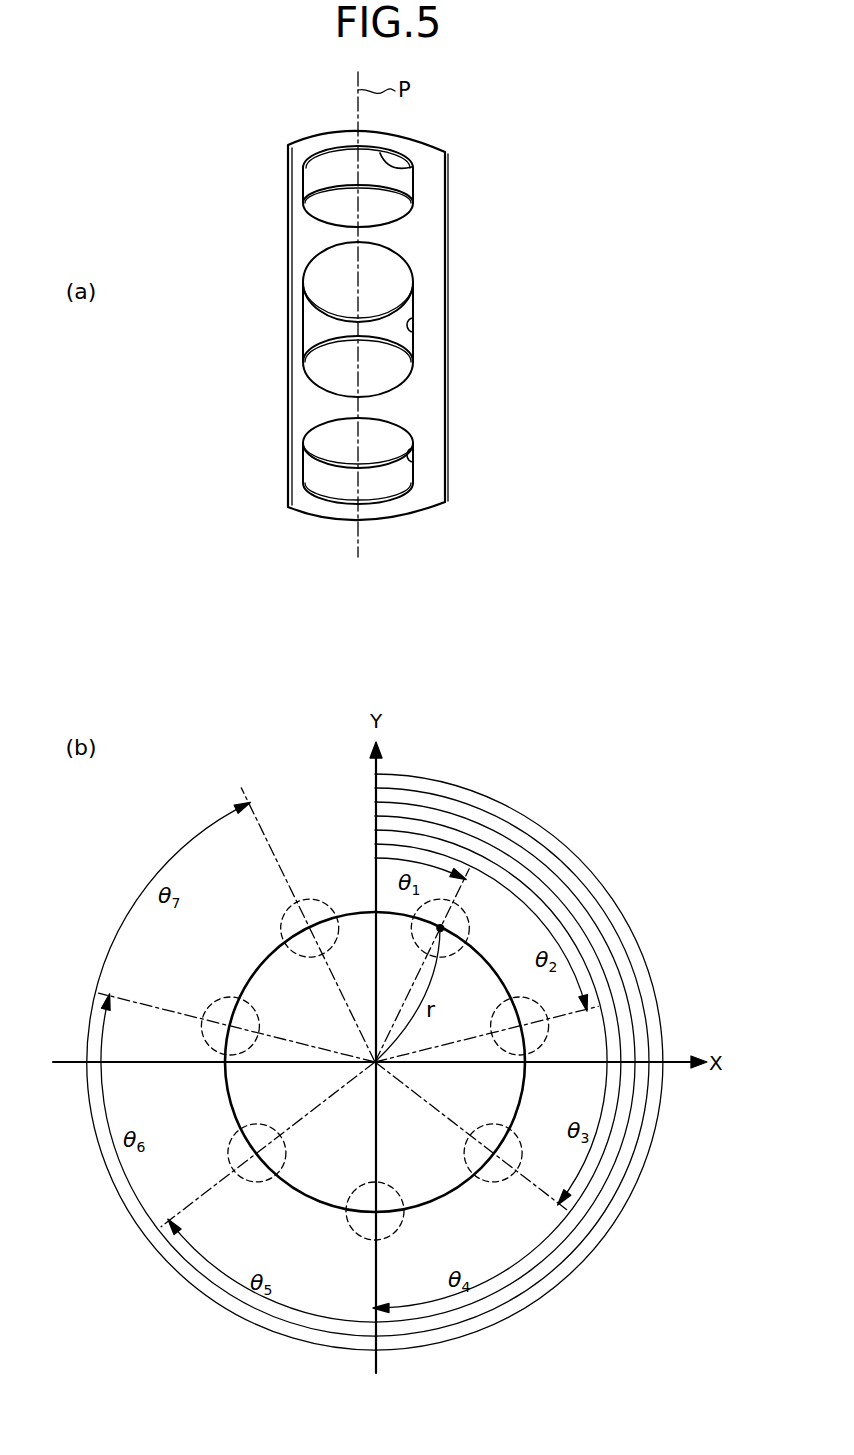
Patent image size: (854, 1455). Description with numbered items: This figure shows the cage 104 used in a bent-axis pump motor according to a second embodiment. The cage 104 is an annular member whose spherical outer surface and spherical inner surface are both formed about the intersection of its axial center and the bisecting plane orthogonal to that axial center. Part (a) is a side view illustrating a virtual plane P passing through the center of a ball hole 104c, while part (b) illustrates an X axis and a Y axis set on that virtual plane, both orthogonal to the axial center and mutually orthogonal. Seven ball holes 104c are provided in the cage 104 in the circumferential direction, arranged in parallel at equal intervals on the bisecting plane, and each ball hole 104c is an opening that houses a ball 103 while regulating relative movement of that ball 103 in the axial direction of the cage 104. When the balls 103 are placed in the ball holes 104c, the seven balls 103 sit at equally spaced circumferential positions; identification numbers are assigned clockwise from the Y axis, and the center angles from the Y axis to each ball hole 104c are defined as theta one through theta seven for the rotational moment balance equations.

The cage 104 is at (437, 243).
The ball hole 104c is at (400, 171).
The ball 103 is at (467, 921).